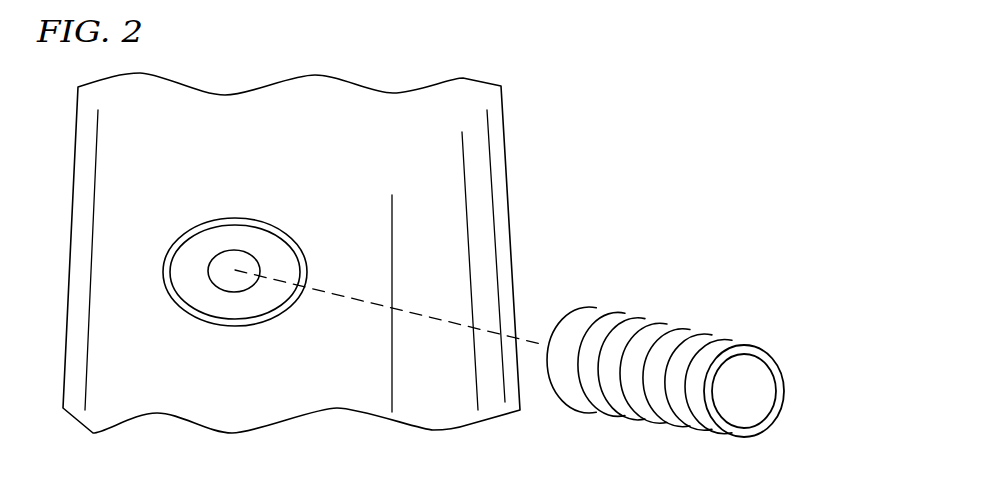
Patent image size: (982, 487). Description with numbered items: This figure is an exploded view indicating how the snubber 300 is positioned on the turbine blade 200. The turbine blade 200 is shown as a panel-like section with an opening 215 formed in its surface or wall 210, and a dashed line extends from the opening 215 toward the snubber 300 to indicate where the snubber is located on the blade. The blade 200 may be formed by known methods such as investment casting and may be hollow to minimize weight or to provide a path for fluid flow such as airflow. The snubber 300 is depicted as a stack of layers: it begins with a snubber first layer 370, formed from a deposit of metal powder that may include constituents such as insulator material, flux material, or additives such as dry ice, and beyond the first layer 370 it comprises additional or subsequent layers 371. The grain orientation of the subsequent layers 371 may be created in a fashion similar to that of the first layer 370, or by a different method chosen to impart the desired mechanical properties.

The turbine blade 200 is at (527, 132).
The surface or wall 210 is at (237, 328).
The opening 215 is at (258, 262).
The snubber 300 is at (696, 355).
The snubber first layer 370 is at (575, 325).
The subsequent layers 371 is at (670, 327).